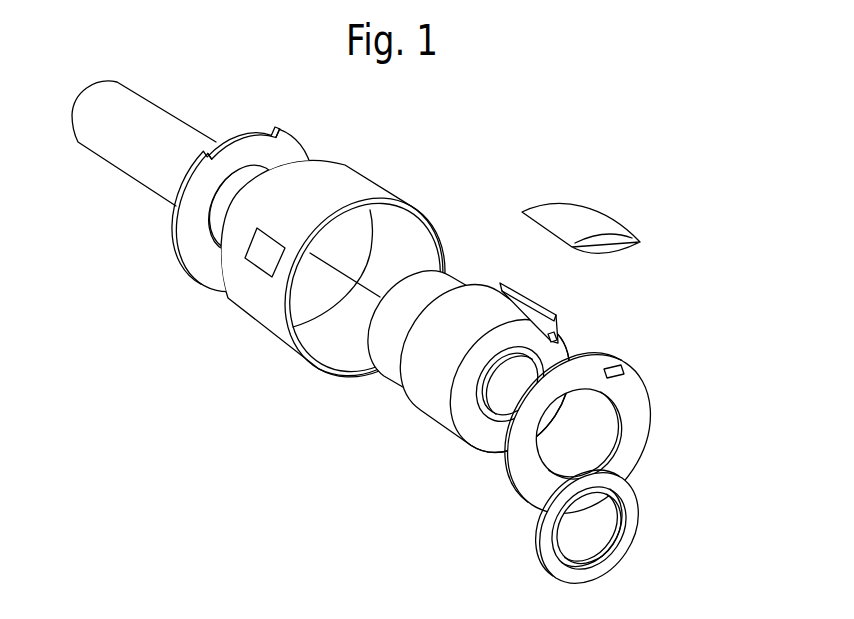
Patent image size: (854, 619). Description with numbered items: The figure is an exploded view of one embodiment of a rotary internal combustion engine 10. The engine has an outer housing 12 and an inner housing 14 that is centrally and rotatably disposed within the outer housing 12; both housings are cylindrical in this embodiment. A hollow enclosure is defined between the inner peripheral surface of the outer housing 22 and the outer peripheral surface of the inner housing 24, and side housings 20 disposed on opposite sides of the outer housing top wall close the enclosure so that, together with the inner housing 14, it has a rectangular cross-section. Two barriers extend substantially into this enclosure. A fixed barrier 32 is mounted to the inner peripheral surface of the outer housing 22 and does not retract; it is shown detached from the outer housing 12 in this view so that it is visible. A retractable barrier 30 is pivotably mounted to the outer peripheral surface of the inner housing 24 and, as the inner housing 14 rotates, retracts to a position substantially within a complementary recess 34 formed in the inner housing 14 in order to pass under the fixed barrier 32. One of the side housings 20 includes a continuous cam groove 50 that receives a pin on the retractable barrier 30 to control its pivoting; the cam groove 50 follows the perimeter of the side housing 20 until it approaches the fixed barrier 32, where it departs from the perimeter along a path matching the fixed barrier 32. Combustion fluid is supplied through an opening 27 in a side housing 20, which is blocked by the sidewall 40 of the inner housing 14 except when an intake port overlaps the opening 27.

The rotary internal combustion engine 10 is at (258, 434).
The outer housing 12 is at (244, 343).
The inner housing 14 is at (392, 405).
The side housings 20 is at (195, 243).
The inner peripheral surface of the outer housing 22 is at (410, 237).
The outer peripheral surface of the inner housing 24 is at (425, 407).
The opening in the side housing 27 is at (623, 364).
The retractable barrier 30 is at (526, 289).
The fixed barrier 32 is at (588, 217).
The recess 34 is at (555, 332).
The sidewall of the inner housing 40 is at (478, 432).
The cam groove 50 is at (278, 132).